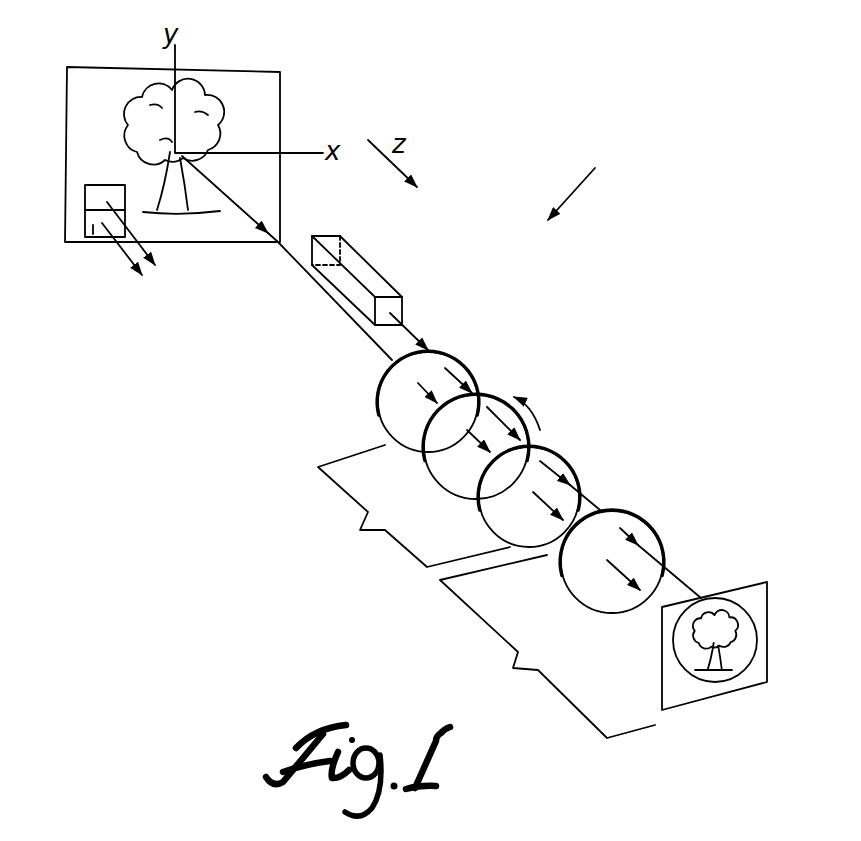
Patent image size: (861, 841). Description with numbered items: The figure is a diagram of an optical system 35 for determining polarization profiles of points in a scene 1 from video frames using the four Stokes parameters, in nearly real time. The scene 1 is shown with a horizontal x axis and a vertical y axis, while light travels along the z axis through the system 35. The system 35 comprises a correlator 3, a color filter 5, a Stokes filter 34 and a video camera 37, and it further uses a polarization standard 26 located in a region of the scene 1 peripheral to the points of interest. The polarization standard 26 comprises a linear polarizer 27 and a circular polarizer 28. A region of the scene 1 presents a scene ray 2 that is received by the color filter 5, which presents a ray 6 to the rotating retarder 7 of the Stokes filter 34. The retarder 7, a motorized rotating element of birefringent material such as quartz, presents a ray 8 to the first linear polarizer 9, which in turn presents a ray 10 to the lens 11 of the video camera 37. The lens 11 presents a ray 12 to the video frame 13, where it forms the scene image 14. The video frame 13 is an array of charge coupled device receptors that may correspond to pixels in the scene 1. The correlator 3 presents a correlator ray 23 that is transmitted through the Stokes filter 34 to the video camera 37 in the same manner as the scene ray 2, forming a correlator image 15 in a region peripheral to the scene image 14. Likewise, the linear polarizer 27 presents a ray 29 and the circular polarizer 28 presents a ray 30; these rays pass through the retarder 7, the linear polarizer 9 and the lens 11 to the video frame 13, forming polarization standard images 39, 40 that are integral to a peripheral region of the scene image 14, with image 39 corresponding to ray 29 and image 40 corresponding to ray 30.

The scene 1 is at (273, 95).
The ray 2 is at (270, 234).
The correlator 3 is at (372, 265).
The color filter 5 is at (427, 355).
The ray 6 is at (426, 396).
The retarder 7 is at (488, 394).
The ray 8 is at (478, 445).
The first linear polarizer 9 is at (540, 448).
The ray 10 is at (543, 508).
The lens 11 is at (620, 512).
The ray 12 is at (620, 575).
The video frame 13 is at (701, 598).
The scene image 14 is at (678, 630).
The correlator image 15 is at (701, 598).
The ray 23 is at (402, 320).
The polarization standard 26 is at (125, 216).
The linear polarizer 27 is at (90, 193).
The circular polarizer 28 is at (93, 225).
The ray 29 is at (147, 248).
The ray 30 is at (122, 246).
The Stokes filter 34 is at (414, 507).
The system 35 is at (589, 184).
The video camera 37 is at (547, 646).
The polarization standard image 39 is at (683, 660).
The polarization standard image 40 is at (690, 663).